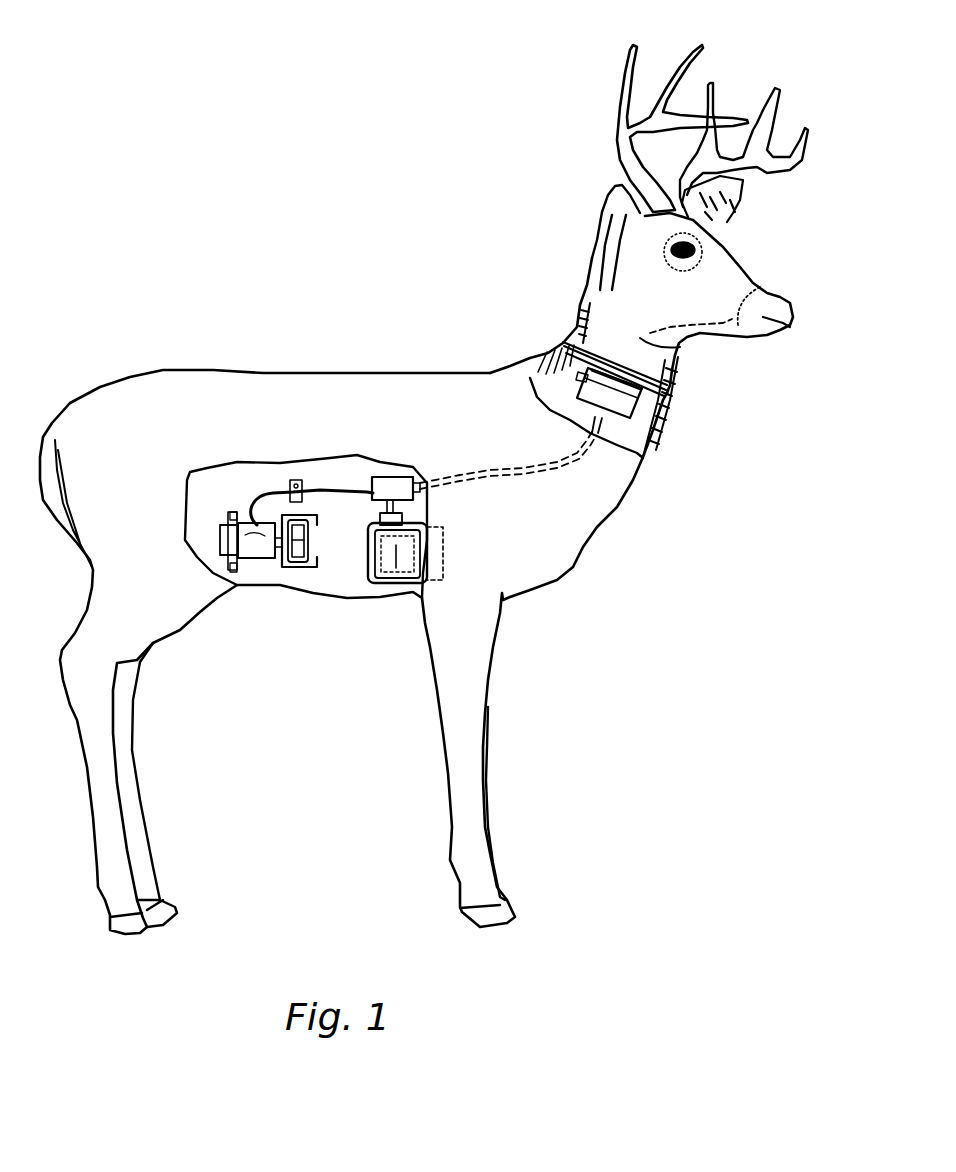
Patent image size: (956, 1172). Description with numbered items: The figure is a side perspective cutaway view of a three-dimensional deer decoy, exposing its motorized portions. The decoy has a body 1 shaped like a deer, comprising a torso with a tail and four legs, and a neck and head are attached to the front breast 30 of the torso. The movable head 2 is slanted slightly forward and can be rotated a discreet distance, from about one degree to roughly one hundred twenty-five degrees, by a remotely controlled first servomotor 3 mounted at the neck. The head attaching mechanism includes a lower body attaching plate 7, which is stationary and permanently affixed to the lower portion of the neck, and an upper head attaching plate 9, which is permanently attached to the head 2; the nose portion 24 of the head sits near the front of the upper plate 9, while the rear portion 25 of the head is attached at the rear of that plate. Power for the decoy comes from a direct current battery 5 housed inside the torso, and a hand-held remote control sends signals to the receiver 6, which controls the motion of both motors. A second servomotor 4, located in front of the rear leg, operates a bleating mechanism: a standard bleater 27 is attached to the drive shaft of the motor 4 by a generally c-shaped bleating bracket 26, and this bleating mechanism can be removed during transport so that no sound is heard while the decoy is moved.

The body 1 is at (265, 395).
The movable head 2 is at (620, 290).
The first servomotor 3 is at (603, 397).
The second servomotor 4 is at (243, 537).
The direct current battery 5 is at (407, 550).
The receiver 6 is at (415, 496).
The lower body attaching plate 7 is at (667, 413).
The upper head attaching plate 9 is at (640, 362).
The nose portion 24 is at (790, 330).
The rear portion of the deer head 25 is at (580, 296).
The bleating bracket 26 is at (290, 567).
The bleater 27 is at (310, 538).
The front breast 30 is at (650, 452).